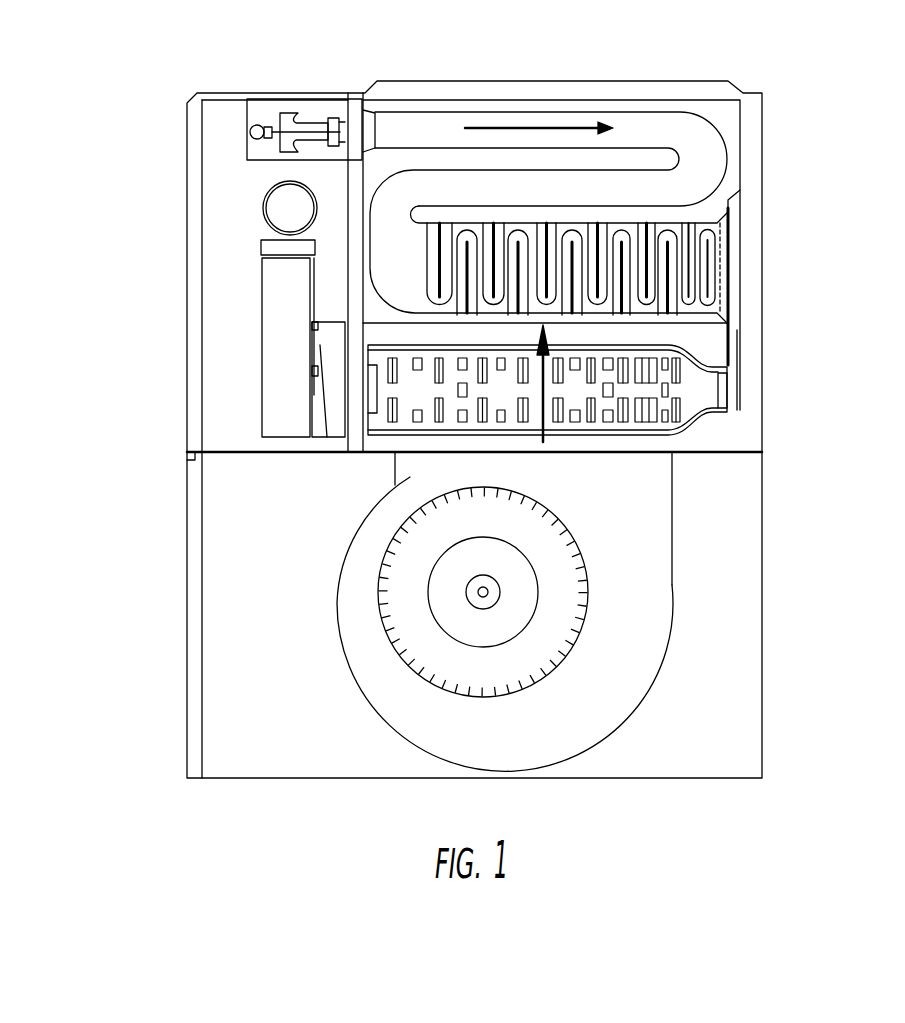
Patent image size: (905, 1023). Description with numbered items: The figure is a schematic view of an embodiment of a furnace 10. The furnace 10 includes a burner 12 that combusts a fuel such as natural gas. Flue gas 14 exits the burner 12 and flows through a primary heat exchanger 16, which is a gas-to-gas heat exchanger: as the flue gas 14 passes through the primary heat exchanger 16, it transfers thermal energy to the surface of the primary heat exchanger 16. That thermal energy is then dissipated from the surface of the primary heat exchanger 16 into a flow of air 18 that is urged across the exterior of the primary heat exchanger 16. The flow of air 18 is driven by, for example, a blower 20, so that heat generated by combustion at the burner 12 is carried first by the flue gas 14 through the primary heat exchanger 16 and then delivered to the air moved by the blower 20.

The furnace 10 is at (108, 247).
The burner 12 is at (280, 127).
The flue gas 14 is at (525, 126).
The primary heat exchanger 16 is at (638, 126).
The flow of air 18 is at (545, 378).
The blower 20 is at (650, 580).